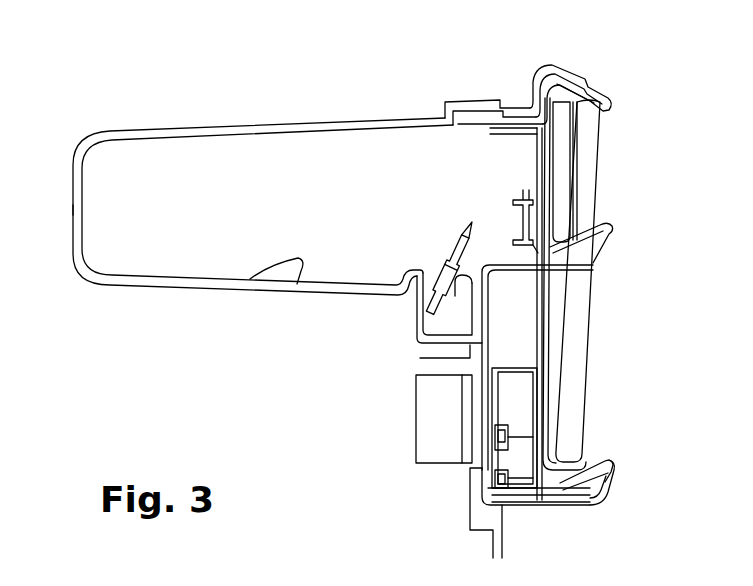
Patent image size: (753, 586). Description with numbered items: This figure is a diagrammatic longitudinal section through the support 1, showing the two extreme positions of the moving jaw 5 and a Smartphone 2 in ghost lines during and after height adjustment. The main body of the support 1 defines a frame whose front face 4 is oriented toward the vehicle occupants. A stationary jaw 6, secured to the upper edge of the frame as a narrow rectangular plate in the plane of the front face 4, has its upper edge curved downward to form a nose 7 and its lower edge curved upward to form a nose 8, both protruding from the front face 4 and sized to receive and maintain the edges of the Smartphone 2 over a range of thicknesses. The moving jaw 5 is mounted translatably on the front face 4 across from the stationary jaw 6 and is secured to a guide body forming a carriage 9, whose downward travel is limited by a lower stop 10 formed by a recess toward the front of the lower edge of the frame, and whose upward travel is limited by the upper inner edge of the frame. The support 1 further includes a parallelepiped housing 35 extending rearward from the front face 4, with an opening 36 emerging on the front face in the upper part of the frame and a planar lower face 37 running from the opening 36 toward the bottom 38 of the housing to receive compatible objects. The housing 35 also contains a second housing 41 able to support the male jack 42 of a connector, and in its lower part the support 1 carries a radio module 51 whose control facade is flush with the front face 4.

The support 1 is at (345, 316).
The Smartphone 2 is at (563, 143).
The front face 4 is at (483, 291).
The moving jaw 5 is at (604, 250).
The stationary jaw 6 is at (579, 78).
The nose 7 is at (596, 117).
The nose 8 is at (602, 457).
The carriage 9 is at (510, 134).
The lower stop 10 is at (480, 553).
The housing 35 is at (308, 197).
The opening 36 is at (487, 203).
The lower face 37 is at (296, 263).
The bottom 38 is at (73, 205).
The second housing 41 is at (460, 338).
The male jack 42 is at (440, 268).
The radio module 51 is at (425, 432).